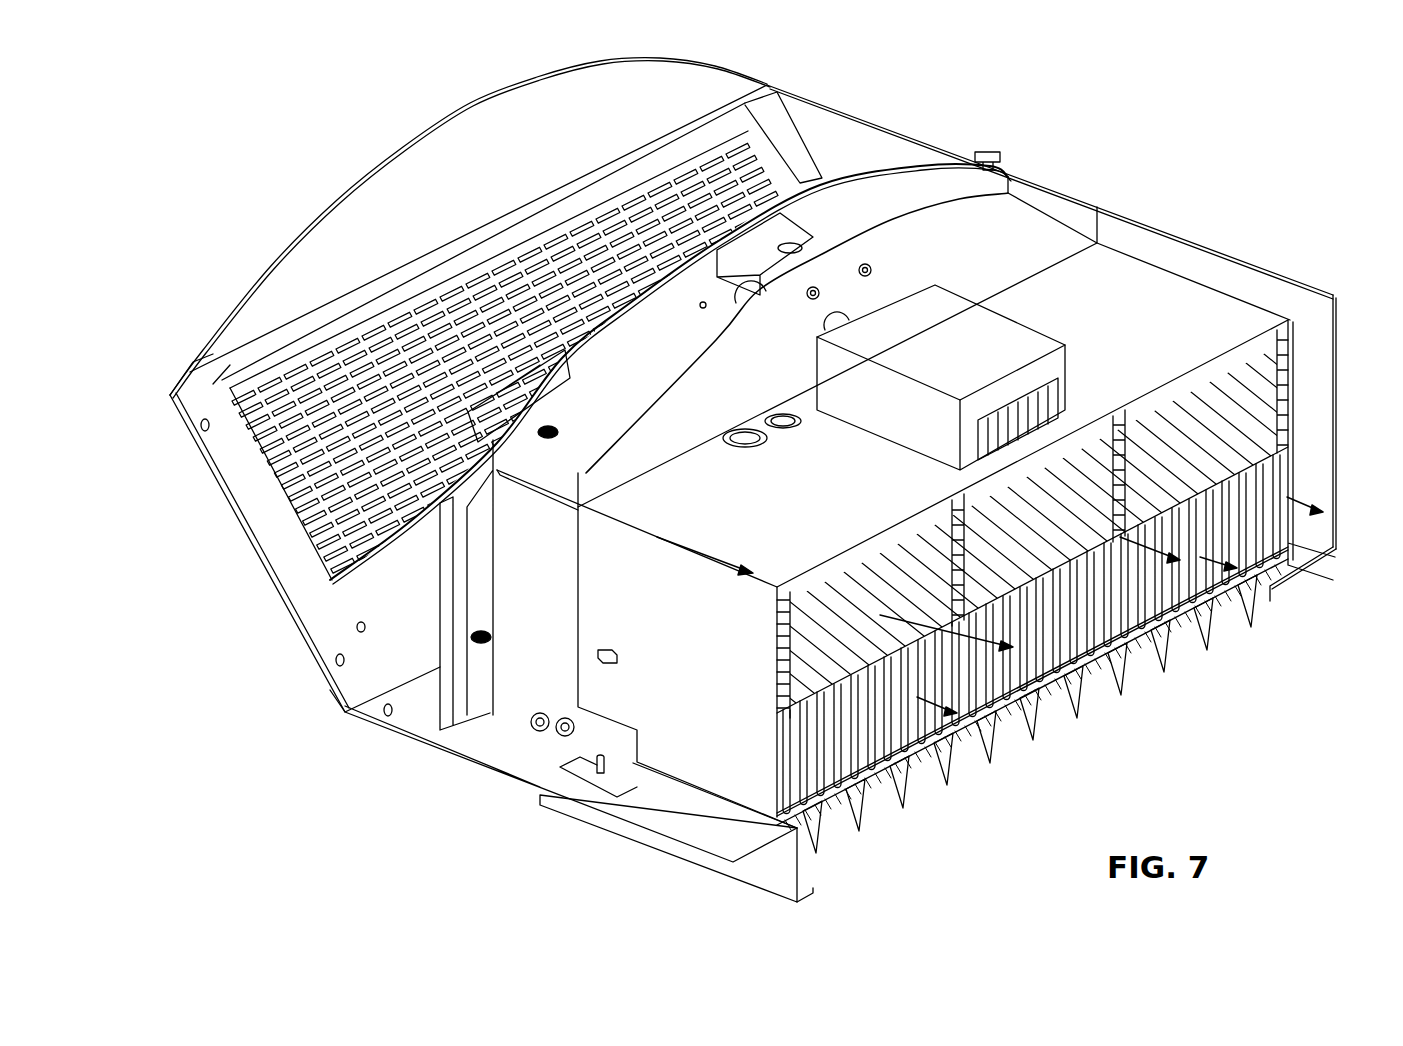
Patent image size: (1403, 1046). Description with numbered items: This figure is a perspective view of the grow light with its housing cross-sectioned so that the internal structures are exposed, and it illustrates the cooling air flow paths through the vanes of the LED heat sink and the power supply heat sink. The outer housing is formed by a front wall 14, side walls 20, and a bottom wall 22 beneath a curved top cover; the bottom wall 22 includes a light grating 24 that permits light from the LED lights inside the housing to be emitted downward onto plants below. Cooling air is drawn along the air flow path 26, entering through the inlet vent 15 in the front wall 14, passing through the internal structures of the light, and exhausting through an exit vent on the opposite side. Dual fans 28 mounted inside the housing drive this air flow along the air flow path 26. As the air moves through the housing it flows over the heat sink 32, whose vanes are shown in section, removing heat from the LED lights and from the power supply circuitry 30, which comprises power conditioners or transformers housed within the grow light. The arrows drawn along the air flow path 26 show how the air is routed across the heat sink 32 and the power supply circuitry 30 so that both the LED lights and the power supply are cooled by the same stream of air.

The front wall 14 is at (267, 575).
The inlet vent 15 is at (283, 457).
The side walls 20 is at (1300, 296).
The bottom wall 22 is at (485, 756).
The light grating 24 is at (784, 866).
The air flow path 26 is at (917, 740).
The dual fans 28 is at (460, 427).
The power supply circuitry 30 is at (1214, 454).
The heat sink 32 is at (837, 712).